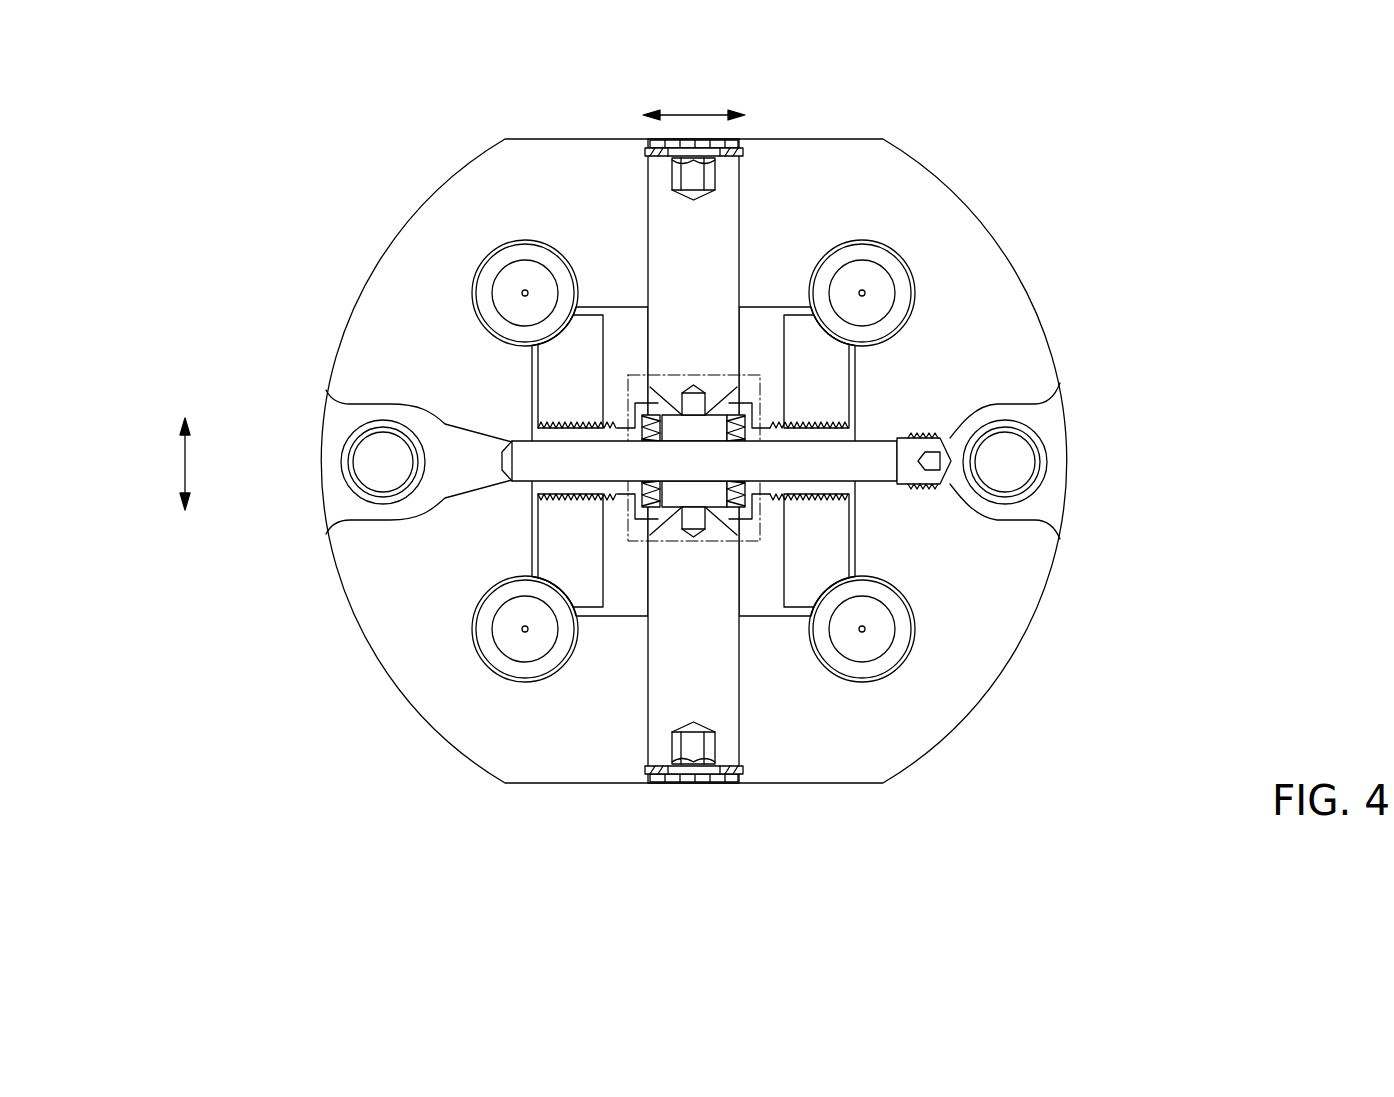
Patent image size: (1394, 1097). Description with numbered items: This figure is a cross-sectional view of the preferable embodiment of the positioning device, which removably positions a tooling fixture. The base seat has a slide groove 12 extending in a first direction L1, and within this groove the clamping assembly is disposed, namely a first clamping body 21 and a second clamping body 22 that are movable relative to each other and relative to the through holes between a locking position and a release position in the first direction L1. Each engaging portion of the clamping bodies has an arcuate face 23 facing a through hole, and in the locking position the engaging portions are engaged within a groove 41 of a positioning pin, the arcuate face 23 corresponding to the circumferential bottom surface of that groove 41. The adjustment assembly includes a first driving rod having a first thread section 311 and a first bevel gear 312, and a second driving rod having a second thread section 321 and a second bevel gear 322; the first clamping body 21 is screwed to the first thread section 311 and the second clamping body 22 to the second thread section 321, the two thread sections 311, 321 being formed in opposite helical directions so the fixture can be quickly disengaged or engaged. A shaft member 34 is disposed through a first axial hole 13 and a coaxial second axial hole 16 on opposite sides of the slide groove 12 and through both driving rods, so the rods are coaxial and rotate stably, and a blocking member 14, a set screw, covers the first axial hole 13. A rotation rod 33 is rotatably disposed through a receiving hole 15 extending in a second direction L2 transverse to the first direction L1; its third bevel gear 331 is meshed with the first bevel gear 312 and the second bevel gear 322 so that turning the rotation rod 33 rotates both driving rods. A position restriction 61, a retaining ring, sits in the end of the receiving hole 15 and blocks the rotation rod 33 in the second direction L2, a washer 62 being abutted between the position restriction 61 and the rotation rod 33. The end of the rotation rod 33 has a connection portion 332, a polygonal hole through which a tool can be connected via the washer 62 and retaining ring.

The slide groove 12 is at (775, 317).
The first axial hole 13 is at (1058, 534).
The blocking member 14 is at (1058, 384).
The receiving hole 15 is at (745, 505).
The second axial hole 16 is at (548, 553).
The first clamping body 21 is at (838, 537).
The second clamping body 22 is at (537, 555).
The arcuate face 23 is at (555, 330).
The rotation rod 33 is at (660, 635).
The shaft member 34 is at (857, 450).
The groove 41 is at (493, 263).
The position restriction 61 is at (737, 780).
The washer 62 is at (663, 773).
The first thread section 311 is at (840, 422).
The first bevel gear 312 is at (738, 693).
The second thread section 321 is at (550, 426).
The second bevel gear 322 is at (650, 503).
The third bevel gear 331 is at (652, 405).
The connection portion 332 is at (693, 760).
The first direction L1 is at (700, 110).
The second direction L2 is at (180, 462).